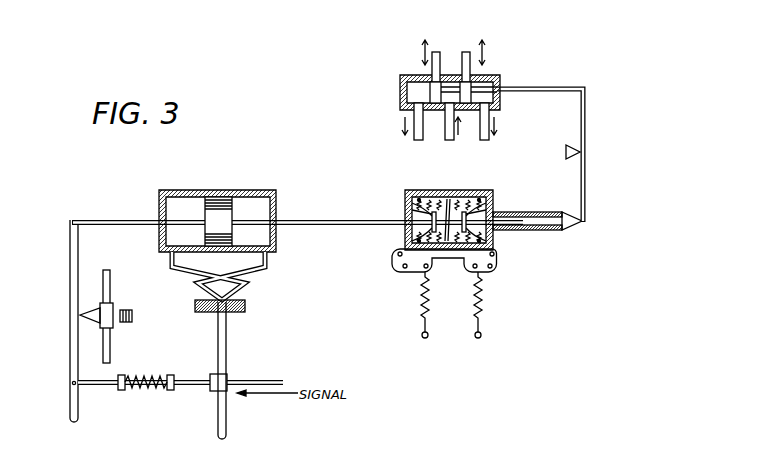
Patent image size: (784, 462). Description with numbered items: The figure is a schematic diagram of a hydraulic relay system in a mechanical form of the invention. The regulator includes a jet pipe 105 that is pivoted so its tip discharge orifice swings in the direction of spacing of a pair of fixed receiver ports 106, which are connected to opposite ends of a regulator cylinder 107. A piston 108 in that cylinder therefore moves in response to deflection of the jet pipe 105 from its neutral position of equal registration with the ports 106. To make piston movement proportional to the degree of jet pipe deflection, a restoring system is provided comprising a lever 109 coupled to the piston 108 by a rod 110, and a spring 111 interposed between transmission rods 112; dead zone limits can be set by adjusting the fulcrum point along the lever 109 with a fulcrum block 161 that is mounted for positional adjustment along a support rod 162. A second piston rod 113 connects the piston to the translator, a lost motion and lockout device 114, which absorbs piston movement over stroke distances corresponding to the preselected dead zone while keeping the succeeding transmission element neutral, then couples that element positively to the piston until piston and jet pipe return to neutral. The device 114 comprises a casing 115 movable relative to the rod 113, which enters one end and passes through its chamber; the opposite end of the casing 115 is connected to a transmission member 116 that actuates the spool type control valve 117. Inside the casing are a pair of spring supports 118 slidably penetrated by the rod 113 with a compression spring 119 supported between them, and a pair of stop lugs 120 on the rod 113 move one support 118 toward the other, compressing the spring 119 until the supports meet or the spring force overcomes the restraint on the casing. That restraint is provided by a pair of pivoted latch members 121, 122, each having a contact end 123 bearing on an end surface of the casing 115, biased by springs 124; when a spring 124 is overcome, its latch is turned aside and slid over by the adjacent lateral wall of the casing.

The jet pipe 105 is at (226, 350).
The receiver ports 106 is at (245, 308).
The regulator cylinder 107 is at (262, 190).
The piston 108 is at (218, 208).
The lever 109 is at (70, 283).
The rod 110 is at (125, 220).
The spring 111 is at (148, 392).
The transmission rods 112 is at (107, 388).
The second piston rod 113 is at (312, 218).
The lost motion and lockout device 114 is at (466, 190).
The casing 115 is at (418, 194).
The transmission member 116 is at (585, 116).
The spool type control valve 117 is at (498, 76).
The spring supports 118 is at (408, 206).
The compression spring 119 is at (448, 198).
The stop lugs 120 is at (412, 233).
The latch member 121 is at (392, 260).
The latch member 122 is at (500, 269).
The contact end 123 is at (394, 247).
The springs 124 is at (421, 307).
The fulcrum block 161 is at (113, 309).
The support rod 162 is at (110, 354).